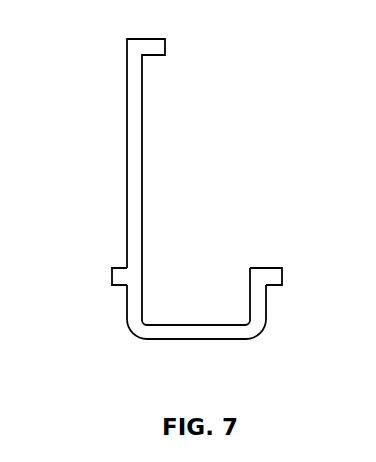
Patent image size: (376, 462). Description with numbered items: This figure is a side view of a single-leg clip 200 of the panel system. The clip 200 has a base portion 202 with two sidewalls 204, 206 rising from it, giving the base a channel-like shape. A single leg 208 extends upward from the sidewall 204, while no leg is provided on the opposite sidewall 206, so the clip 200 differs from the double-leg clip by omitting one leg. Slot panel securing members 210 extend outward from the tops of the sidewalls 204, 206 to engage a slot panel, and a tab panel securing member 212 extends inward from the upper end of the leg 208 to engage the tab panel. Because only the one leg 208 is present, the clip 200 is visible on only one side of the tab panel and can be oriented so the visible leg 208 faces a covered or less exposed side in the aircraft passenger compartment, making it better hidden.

The clip 200 is at (253, 71).
The base portion 202 is at (118, 346).
The sidewall 204 is at (132, 297).
The sidewall 206 is at (260, 303).
The leg 208 is at (133, 163).
The slot panel securing members 210 is at (117, 277).
The tab panel securing member 212 is at (165, 47).